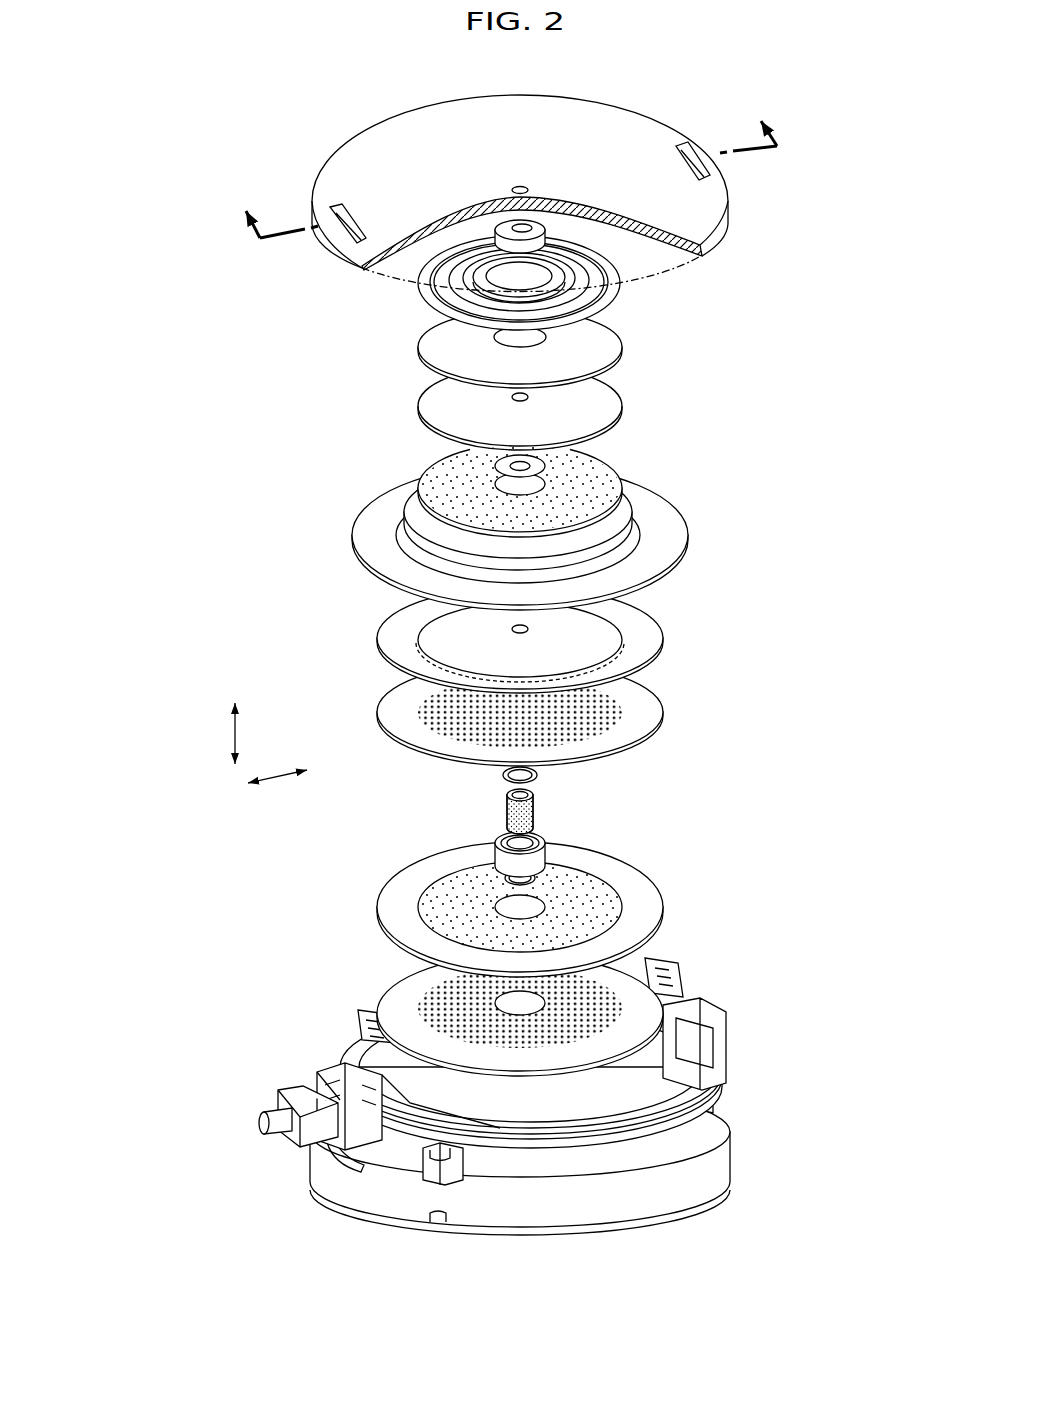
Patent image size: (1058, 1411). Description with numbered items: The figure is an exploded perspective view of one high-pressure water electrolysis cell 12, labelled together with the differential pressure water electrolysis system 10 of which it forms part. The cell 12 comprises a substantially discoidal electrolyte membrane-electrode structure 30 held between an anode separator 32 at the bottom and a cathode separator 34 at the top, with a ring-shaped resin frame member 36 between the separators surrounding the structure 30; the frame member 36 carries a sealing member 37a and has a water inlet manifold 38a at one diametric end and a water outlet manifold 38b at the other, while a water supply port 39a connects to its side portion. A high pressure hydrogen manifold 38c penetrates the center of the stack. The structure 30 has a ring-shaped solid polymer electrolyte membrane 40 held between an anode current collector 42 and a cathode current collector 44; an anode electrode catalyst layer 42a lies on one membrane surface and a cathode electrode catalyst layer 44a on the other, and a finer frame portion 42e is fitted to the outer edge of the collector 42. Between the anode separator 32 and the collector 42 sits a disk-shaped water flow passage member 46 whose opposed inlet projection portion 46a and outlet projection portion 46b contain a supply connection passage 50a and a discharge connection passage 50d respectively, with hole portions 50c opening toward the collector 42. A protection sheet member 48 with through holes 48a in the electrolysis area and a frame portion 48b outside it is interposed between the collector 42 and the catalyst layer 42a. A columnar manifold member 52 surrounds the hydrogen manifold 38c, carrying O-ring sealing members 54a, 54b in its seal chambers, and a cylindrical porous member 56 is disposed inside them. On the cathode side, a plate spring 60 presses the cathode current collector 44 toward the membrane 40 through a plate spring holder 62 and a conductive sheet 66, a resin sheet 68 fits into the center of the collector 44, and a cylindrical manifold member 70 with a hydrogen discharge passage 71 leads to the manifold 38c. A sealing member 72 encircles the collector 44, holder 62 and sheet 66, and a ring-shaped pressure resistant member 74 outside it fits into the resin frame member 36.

The sensor device 10 is at (648, 81).
The high-pressure water electrolysis cell 12 is at (614, 81).
The electrolyte membrane-electrode structure 30 is at (520, 638).
The anode separator 32 is at (538, 1155).
The cathode separator 34 is at (535, 212).
The resin frame member 36 is at (501, 1092).
The sealing member 37a is at (370, 1050).
The water inlet manifold 38a is at (338, 1155).
The water outlet manifold 38b is at (714, 1098).
The high pressure hydrogen manifold 38c is at (524, 633).
The water supply port 39a is at (266, 1134).
The solid polymer electrolyte membrane 40 is at (516, 638).
The anode current collector 42 is at (523, 894).
The anode electrode catalyst layer 42a is at (440, 641).
The frame portion 42e is at (628, 872).
The cathode current collector 44 is at (536, 469).
The cathode electrode catalyst layer 44a is at (433, 628).
The water flow passage member 46 is at (518, 1013).
The inlet projection portion 46a is at (362, 1015).
The outlet projection portion 46b is at (682, 980).
The protection sheet member 48 is at (552, 731).
The through holes 48a is at (613, 720).
The frame portion 48b is at (636, 718).
The supply connection passage 50a is at (375, 1010).
The hole portions 50c is at (470, 1040).
The discharge connection passage 50d is at (661, 975).
The manifold member 52 is at (496, 834).
The sealing member 54a is at (502, 777).
The sealing member 54b is at (505, 878).
The porous member 56 is at (536, 806).
The plate spring 60 is at (450, 265).
The plate spring holder 62 is at (435, 345).
The conductive sheet 66 is at (432, 400).
The resin sheet 68 is at (534, 462).
The manifold member 70 is at (513, 194).
The hydrogen discharge passage 71 is at (507, 230).
The sealing member 72 is at (630, 505).
The pressure resistant member 74 is at (530, 531).